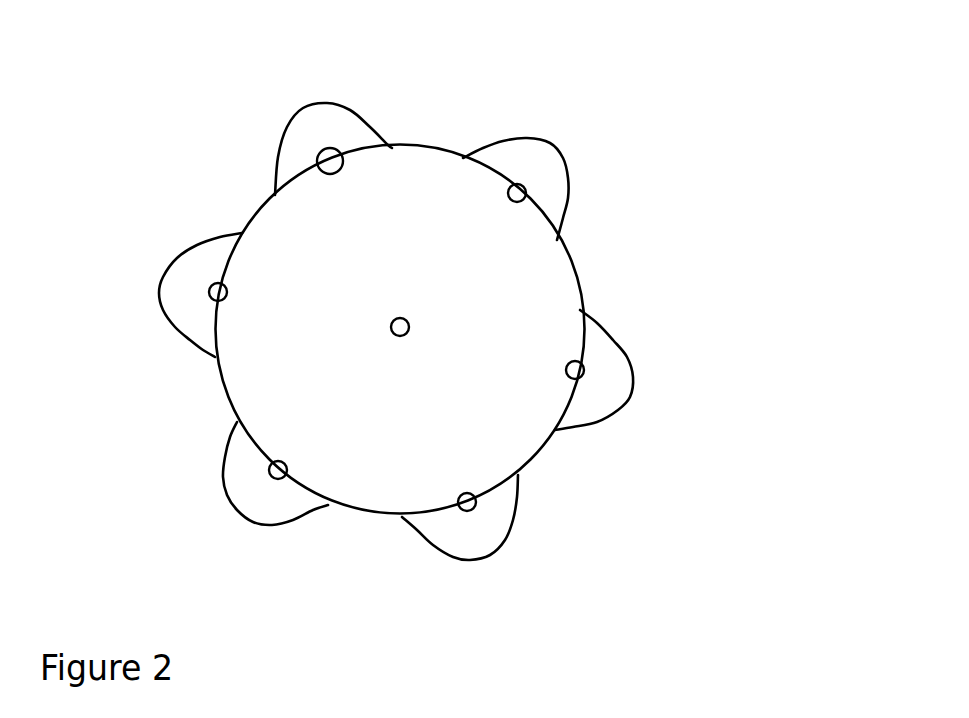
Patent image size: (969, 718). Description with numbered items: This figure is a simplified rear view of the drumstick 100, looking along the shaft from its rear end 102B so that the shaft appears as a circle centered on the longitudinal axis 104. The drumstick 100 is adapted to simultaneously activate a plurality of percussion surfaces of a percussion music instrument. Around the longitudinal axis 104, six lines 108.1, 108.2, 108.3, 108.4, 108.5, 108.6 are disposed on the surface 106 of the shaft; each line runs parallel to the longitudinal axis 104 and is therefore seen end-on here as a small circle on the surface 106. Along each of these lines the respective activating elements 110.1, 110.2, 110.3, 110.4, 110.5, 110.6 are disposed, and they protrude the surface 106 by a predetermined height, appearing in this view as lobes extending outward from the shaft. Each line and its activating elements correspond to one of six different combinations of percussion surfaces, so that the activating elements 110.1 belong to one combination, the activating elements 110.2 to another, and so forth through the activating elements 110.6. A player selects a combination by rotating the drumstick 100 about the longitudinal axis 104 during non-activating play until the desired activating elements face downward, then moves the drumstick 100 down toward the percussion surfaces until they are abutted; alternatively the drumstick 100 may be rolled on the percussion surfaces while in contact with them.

The drumstick 100 is at (735, 80).
The rear end 102B is at (552, 290).
The longitudinal axis 104 is at (392, 334).
The surface 106 is at (548, 443).
The line 108.1 is at (509, 186).
The line 108.2 is at (584, 368).
The line 108.3 is at (476, 504).
The line 108.4 is at (284, 479).
The line 108.5 is at (209, 297).
The line 108.6 is at (316, 162).
The activating elements 110.1 is at (545, 170).
The activating elements 110.2 is at (600, 405).
The activating elements 110.3 is at (487, 530).
The activating elements 110.4 is at (257, 488).
The activating elements 110.5 is at (188, 270).
The activating elements 110.6 is at (323, 127).